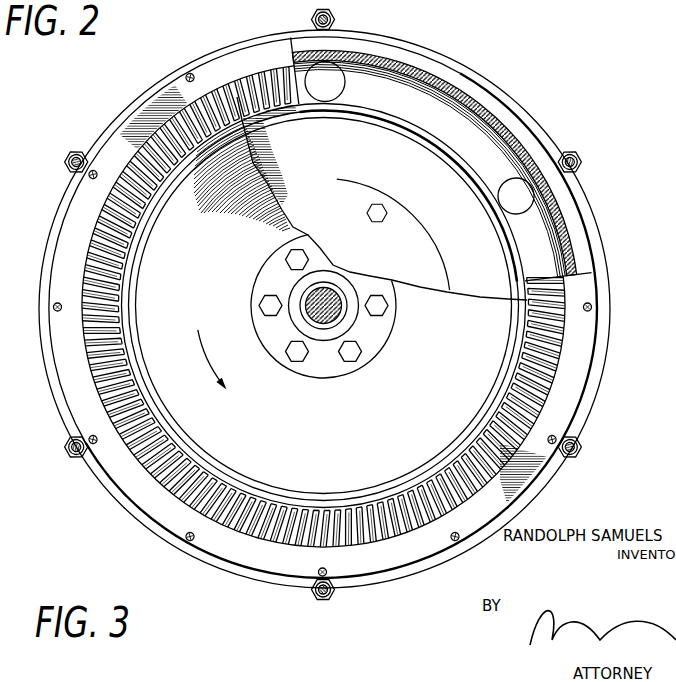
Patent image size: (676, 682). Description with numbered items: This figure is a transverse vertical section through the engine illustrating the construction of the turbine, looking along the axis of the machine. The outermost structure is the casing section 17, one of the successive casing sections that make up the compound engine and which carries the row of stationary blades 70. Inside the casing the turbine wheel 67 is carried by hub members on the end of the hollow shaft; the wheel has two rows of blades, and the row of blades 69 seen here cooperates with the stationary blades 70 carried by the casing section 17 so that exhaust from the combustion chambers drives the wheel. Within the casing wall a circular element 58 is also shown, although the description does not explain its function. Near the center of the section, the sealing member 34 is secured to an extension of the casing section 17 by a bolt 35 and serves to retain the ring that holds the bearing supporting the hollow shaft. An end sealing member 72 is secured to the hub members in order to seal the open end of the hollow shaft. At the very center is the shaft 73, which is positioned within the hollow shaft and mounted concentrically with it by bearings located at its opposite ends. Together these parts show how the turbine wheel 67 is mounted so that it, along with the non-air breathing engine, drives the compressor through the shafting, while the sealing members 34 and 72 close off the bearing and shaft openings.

The casing section 17 is at (382, 55).
The row of stationary blades 70 is at (288, 72).
The row of blades 69 is at (230, 100).
The turbine wheel 67 is at (265, 173).
The sealing member 34 is at (427, 242).
The bolt 35 is at (380, 211).
The ball 58 is at (344, 87).
The end sealing member 72 is at (375, 347).
The shaft 73 is at (324, 323).